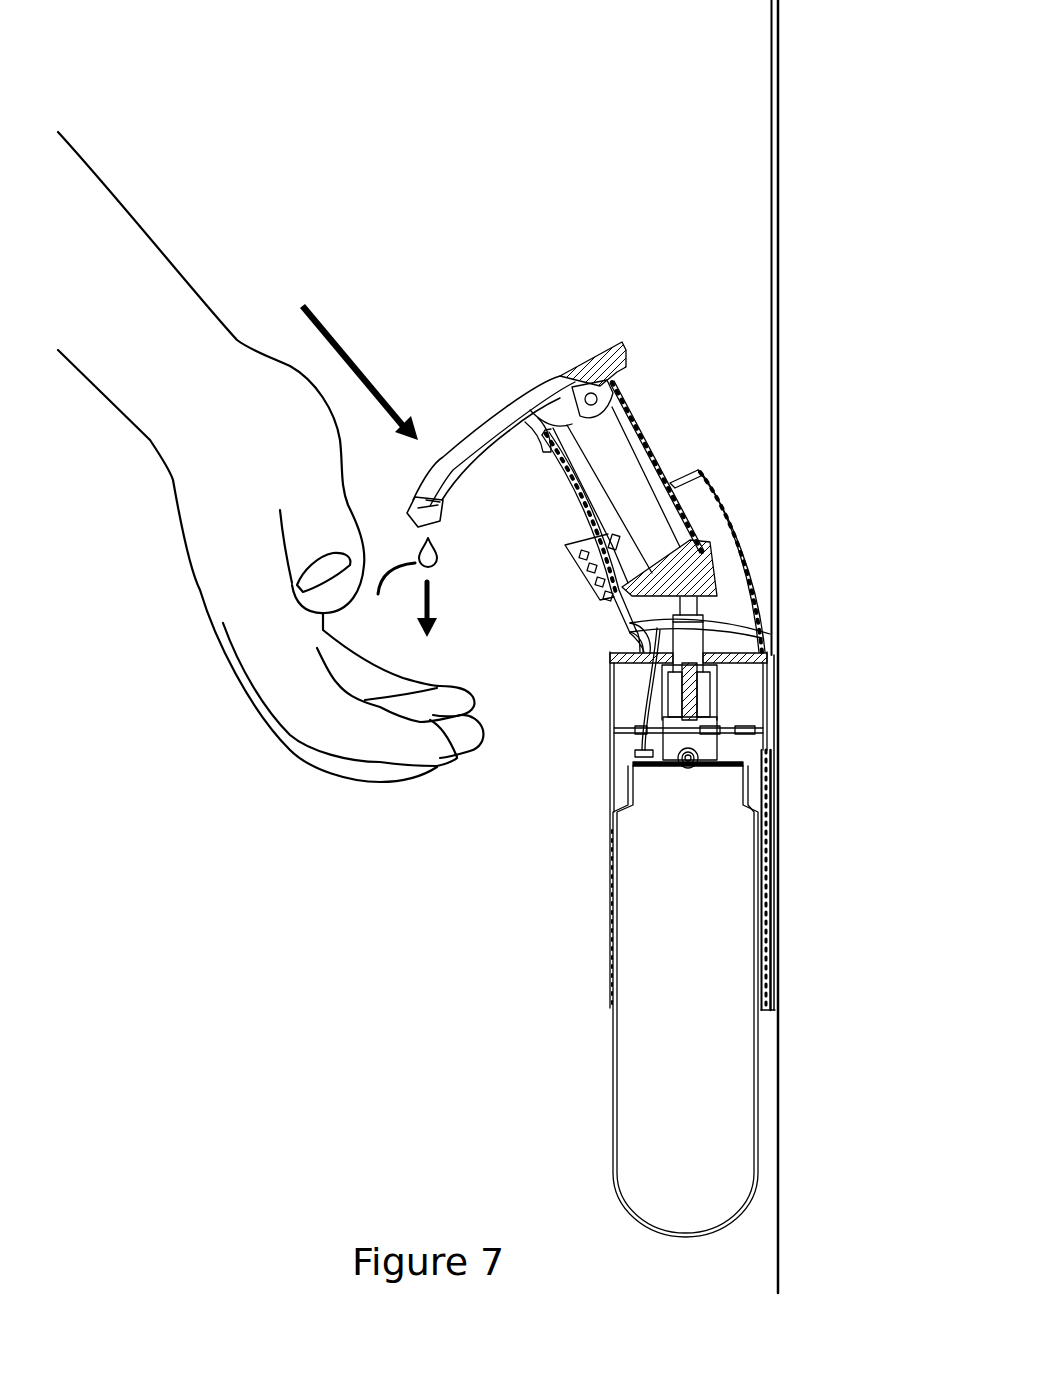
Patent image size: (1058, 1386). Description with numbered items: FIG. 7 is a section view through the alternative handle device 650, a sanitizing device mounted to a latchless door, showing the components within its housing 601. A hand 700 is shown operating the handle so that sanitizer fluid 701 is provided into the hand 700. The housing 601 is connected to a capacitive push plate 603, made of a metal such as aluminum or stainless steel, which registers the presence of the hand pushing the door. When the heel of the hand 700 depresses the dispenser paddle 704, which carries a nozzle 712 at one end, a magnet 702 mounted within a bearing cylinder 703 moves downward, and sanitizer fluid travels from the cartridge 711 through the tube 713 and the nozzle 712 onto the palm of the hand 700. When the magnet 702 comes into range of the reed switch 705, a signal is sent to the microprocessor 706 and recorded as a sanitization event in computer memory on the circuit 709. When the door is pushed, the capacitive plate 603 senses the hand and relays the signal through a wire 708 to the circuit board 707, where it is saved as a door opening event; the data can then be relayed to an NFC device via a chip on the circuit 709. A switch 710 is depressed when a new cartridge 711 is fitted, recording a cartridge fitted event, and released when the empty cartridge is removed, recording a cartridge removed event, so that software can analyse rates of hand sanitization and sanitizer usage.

The housing 601 is at (747, 550).
The capacitive push plate 603 is at (779, 170).
The handle device 650 is at (606, 305).
The hand 700 is at (203, 588).
The sanitizer fluid 701 is at (400, 587).
The magnet 702 is at (590, 534).
The bearing cylinder 703 is at (640, 435).
The dispenser paddle 704 is at (557, 378).
The reed switch 705 is at (592, 556).
The microprocessor 706 is at (602, 568).
The circuit board 707 is at (610, 583).
The wire 708 is at (653, 653).
The circuit 709 is at (612, 603).
The switch 710 is at (640, 755).
The cartridge 711 is at (645, 1085).
The nozzle 712 is at (433, 522).
The tube 713 is at (623, 482).